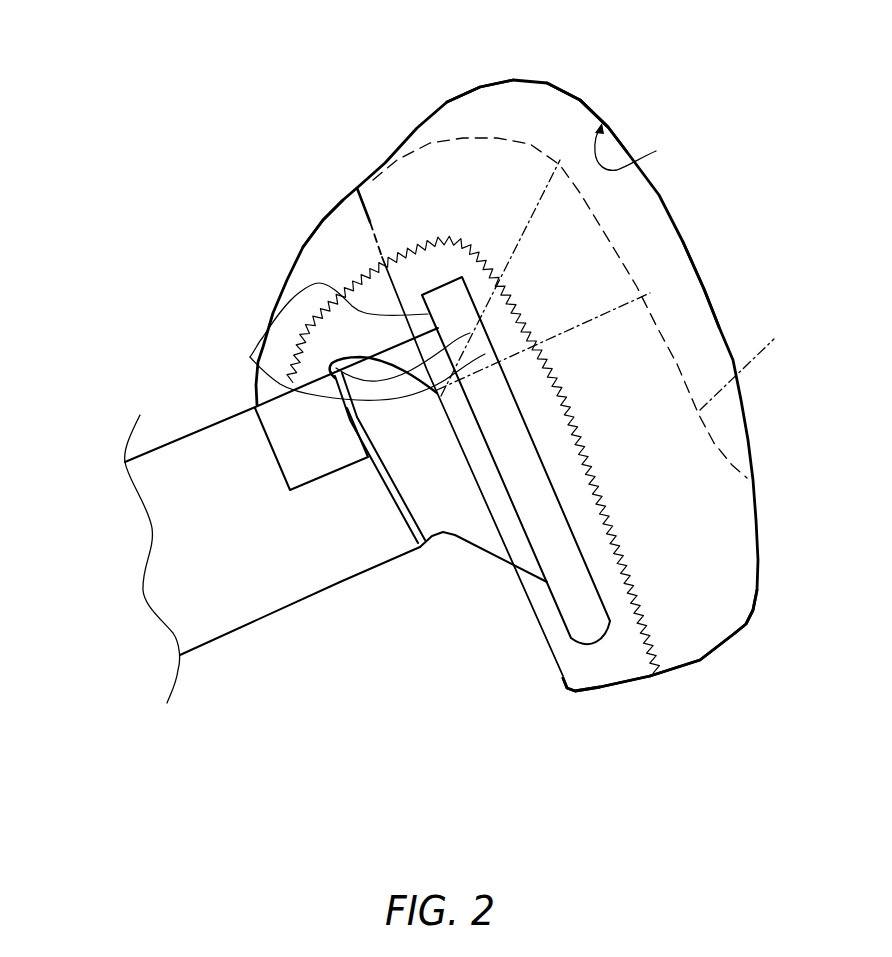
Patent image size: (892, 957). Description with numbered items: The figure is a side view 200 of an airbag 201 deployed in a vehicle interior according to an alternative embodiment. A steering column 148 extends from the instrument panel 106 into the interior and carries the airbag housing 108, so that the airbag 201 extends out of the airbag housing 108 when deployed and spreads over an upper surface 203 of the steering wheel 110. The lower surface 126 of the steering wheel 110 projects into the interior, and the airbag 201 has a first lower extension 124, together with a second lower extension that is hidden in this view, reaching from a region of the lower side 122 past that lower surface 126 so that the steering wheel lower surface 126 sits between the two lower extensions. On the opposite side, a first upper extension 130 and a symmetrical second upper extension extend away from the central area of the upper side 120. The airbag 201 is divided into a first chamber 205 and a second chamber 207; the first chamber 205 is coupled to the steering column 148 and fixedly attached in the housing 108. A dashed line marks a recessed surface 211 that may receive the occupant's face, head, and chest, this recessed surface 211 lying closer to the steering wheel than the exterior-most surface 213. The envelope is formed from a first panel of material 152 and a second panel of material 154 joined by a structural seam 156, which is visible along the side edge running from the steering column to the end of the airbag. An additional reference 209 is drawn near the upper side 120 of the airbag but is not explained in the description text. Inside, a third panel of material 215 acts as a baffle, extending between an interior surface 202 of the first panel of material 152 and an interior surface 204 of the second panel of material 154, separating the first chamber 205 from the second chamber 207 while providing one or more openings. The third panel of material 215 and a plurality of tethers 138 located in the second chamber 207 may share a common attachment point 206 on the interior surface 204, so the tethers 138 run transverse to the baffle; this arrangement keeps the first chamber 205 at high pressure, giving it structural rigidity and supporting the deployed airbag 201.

The side view 200 is at (143, 88).
The upper side 120 is at (517, 100).
The first upper extension 130 is at (562, 100).
The airbag 201 is at (488, 77).
The direction of curvature 209 is at (570, 128).
The interior surface of the first panel of material 202 is at (647, 146).
The tethers 138 is at (530, 223).
The exterior-most surface 213 is at (702, 260).
The recessed surface 211 is at (757, 364).
The structural seam 156 is at (613, 518).
The first lower extension 124 is at (757, 618).
The lower side 122 is at (688, 606).
The lower surface 126 is at (607, 628).
The first panel of material 152 is at (377, 180).
The second chamber 207 is at (408, 193).
The first chamber 205 is at (337, 243).
The third panel of material 215 is at (365, 221).
The interior surface of the second panel of material 204 is at (467, 437).
The upper surface 203 is at (313, 280).
The steering wheel 110 is at (588, 622).
The steering column 148 is at (363, 537).
The common attachment point 206 is at (250, 357).
The second panel of material 154 is at (344, 358).
The instrument panel 106 is at (140, 633).
The airbag housing 108 is at (313, 453).